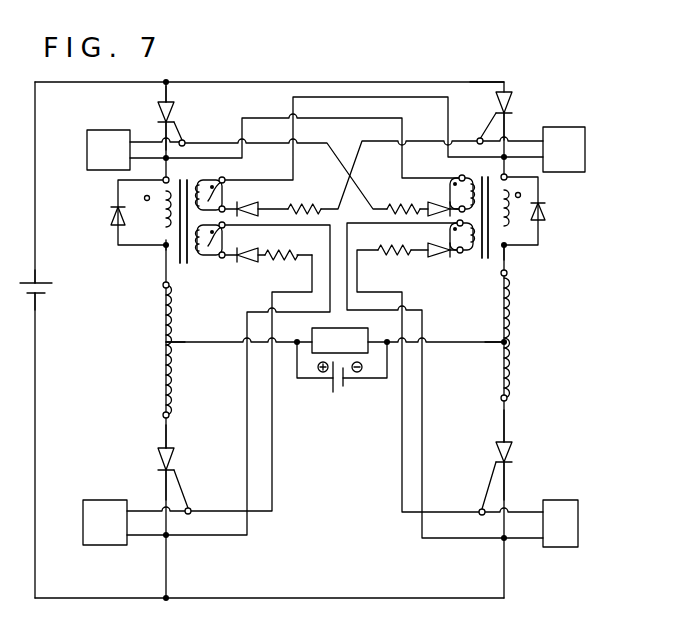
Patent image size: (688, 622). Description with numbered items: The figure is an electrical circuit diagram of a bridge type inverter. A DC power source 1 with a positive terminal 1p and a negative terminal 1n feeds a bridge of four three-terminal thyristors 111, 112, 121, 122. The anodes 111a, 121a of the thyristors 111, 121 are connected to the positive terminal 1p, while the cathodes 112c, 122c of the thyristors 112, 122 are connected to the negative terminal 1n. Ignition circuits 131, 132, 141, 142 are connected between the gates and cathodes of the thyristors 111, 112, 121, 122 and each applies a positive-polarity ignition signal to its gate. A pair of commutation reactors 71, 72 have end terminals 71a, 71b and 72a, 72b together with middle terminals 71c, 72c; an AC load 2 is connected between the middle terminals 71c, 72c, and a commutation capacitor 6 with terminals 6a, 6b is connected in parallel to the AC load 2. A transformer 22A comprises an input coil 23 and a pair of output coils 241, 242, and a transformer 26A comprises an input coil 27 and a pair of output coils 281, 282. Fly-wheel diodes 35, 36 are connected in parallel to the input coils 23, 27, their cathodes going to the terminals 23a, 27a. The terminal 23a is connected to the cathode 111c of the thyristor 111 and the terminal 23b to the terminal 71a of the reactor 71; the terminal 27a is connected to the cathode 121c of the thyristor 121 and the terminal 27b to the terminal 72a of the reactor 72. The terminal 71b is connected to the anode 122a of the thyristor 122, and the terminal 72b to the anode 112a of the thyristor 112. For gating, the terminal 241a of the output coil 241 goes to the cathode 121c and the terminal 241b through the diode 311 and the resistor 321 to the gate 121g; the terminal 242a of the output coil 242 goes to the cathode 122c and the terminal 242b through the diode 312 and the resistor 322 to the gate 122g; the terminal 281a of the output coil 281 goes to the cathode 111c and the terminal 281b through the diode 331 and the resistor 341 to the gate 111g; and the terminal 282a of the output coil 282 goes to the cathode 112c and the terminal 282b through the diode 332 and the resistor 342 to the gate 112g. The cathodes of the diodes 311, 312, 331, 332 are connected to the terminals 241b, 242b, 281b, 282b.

The DC power source 1 is at (22, 282).
The positive terminal 1p is at (39, 266).
The negative terminal 1n is at (39, 311).
The AC load 2 is at (322, 328).
The commutation capacitor 6 is at (339, 393).
The commutation capacitor terminal 6a is at (320, 374).
The commutation capacitor terminal 6b is at (358, 374).
The transformer 22A is at (210, 286).
The input coil 23 is at (163, 212).
The terminal of input coil 23a is at (163, 181).
The terminal of input coil 23b is at (164, 249).
The transformer 26A is at (497, 282).
The input coil 27 is at (510, 215).
The terminal of input coil 27a is at (506, 178).
The terminal of input coil 27b is at (505, 248).
The fly-wheel diode 35 is at (113, 216).
The fly-wheel diode 36 is at (546, 206).
The commutation reactor 71 is at (163, 350).
The reactor terminal 71a is at (163, 286).
The reactor terminal 71b is at (169, 415).
The middle terminal 71c is at (167, 345).
The commutation reactor 72 is at (508, 334).
The reactor terminal 72a is at (506, 276).
The reactor terminal 72b is at (506, 397).
The middle terminal 72c is at (500, 344).
The thyristor 111 is at (155, 104).
The anode 111a is at (170, 99).
The cathode 111c is at (157, 128).
The gate 111g is at (183, 139).
The thyristor 112 is at (512, 447).
The anode 112a is at (505, 424).
The cathode 112c is at (507, 485).
The gate 112g is at (489, 483).
The thyristor 121 is at (508, 102).
The anode 121a is at (495, 83).
The cathode 121c is at (510, 125).
The gate 121g is at (479, 137).
The thyristor 122 is at (157, 457).
The anode 122a is at (168, 438).
The cathode 122c is at (165, 496).
The gate 122g is at (181, 489).
The ignition circuit 131 is at (87, 153).
The ignition circuit 132 is at (579, 527).
The ignition circuit 141 is at (586, 153).
The ignition circuit 142 is at (98, 546).
The output coil 241 is at (216, 195).
The terminal of output coil 241a is at (219, 180).
The terminal of output coil 241b is at (224, 208).
The output coil 242 is at (216, 262).
The terminal of output coil 242a is at (224, 227).
The terminal of output coil 242b is at (221, 258).
The output coil 281 is at (470, 192).
The terminal of output coil 281a is at (460, 175).
The terminal of output coil 281b is at (460, 212).
The output coil 282 is at (445, 275).
The terminal of output coil 282a is at (459, 226).
The terminal of output coil 282b is at (458, 253).
The diode 311 is at (262, 207).
The diode 312 is at (245, 261).
The resistor 321 is at (316, 199).
The resistor 322 is at (298, 261).
The diode 331 is at (437, 204).
The diode 332 is at (428, 246).
The resistor 341 is at (396, 205).
The resistor 342 is at (388, 258).